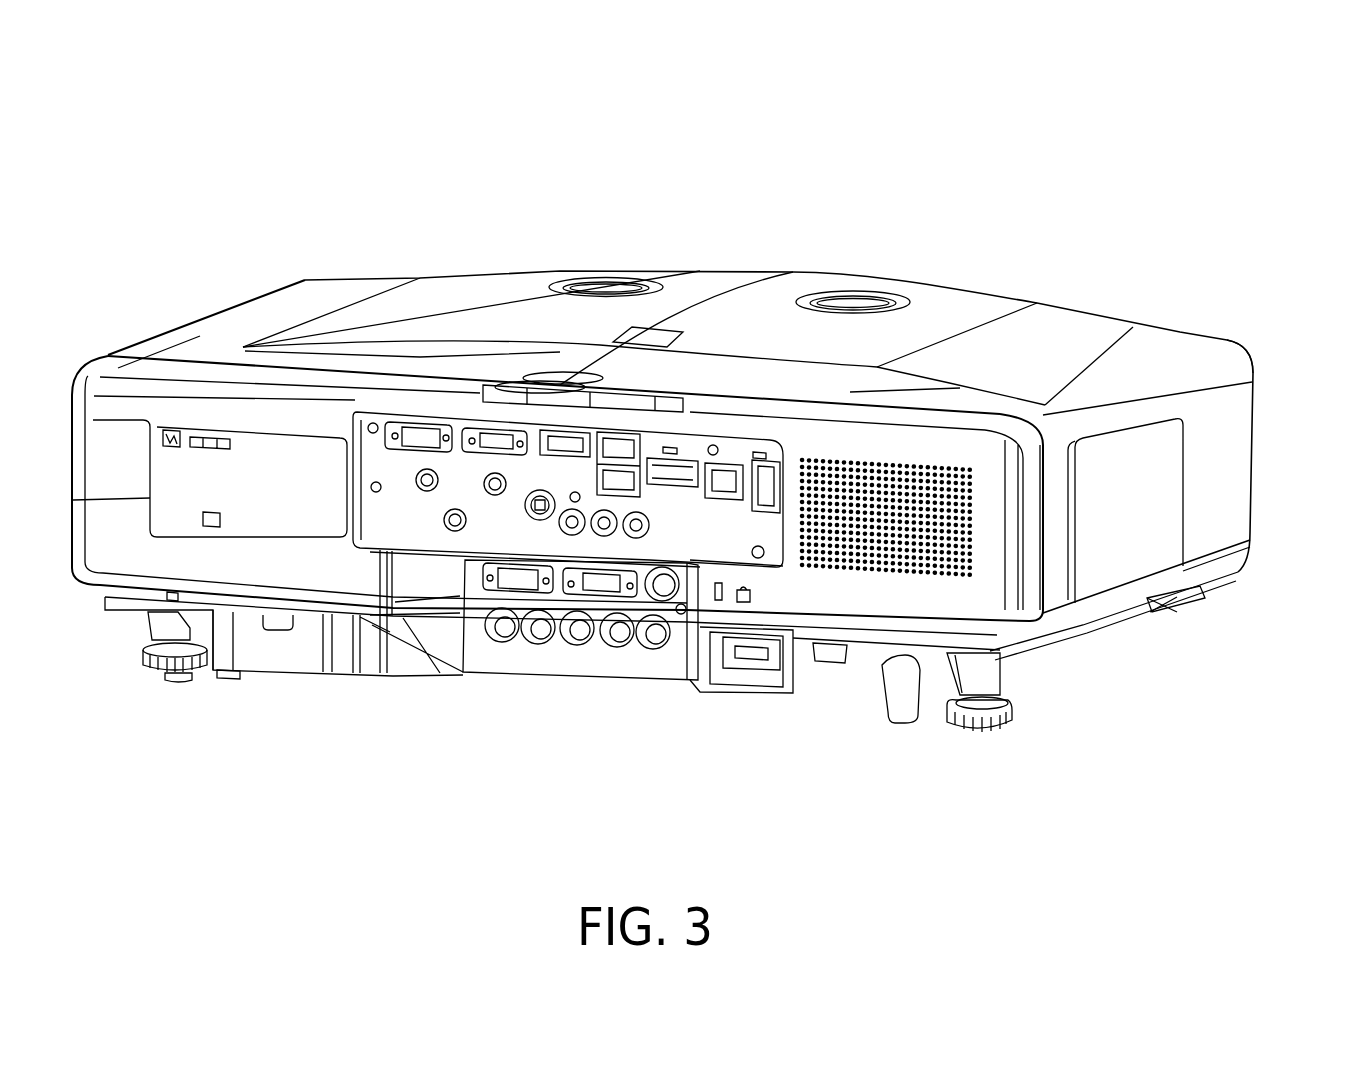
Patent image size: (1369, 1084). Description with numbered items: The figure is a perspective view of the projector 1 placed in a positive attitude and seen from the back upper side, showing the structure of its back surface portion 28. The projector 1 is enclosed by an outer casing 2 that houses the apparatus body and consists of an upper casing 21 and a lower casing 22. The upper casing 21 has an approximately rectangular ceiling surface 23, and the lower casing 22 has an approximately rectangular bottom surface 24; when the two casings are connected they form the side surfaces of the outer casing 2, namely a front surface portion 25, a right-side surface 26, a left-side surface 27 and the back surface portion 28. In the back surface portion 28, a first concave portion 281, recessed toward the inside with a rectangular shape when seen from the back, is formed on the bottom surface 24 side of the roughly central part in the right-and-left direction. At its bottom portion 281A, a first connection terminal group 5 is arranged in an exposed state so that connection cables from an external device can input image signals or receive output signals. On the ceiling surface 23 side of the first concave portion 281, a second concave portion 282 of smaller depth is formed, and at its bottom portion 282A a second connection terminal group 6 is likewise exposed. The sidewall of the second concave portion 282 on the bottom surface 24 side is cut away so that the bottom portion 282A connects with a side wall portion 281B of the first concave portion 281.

The projector 1 is at (455, 135).
The outer casing 2 is at (1305, 530).
The upper casing 21 is at (1235, 522).
The lower casing 22 is at (1220, 570).
The ceiling surface 23 is at (1003, 305).
The bottom surface 24 is at (290, 688).
The front surface portion 25 is at (1262, 380).
The right-side surface 26 is at (150, 334).
The left-side surface 27 is at (1237, 437).
The back surface portion 28 is at (166, 555).
The first concave portion 281 is at (478, 650).
The bottom portion of the first concave portion 281A is at (670, 665).
The side wall portion of the first concave portion 281B is at (430, 570).
The second concave portion 282 is at (373, 457).
The bottom portion of the second concave portion 282A is at (760, 532).
The first connection terminal group 5 is at (600, 585).
The second connection terminal group 6 is at (718, 468).